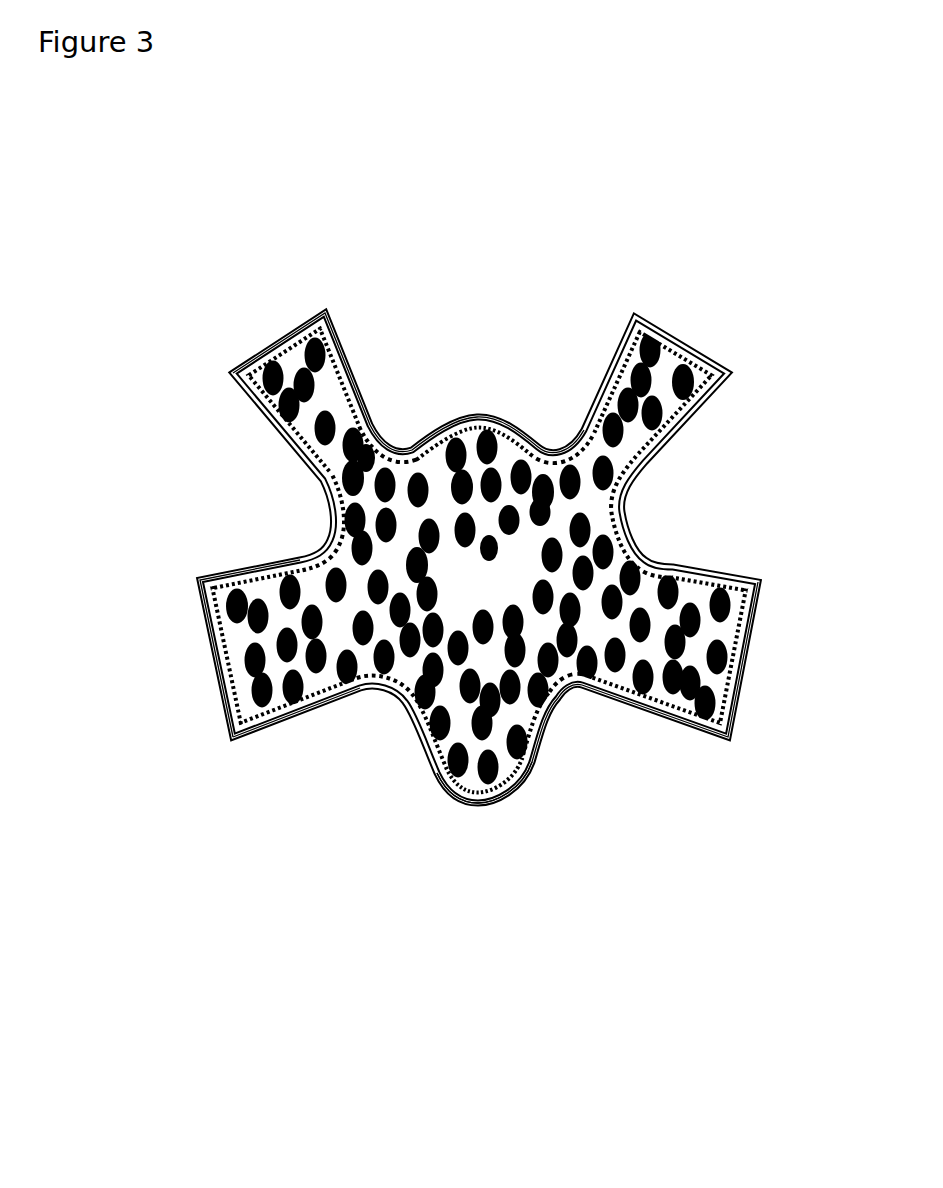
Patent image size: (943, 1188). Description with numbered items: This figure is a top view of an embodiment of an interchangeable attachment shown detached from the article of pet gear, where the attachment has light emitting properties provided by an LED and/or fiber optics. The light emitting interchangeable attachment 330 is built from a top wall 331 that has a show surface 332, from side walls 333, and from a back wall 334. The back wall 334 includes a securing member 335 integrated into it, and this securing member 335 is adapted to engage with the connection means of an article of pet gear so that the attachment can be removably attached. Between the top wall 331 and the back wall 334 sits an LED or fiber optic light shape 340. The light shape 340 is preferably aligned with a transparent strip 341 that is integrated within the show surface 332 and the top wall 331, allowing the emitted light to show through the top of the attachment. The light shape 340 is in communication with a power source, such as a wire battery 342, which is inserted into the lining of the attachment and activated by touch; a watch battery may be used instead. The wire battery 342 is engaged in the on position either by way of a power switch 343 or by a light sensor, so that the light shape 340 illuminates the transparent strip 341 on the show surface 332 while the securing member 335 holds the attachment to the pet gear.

The light emitting interchangeable attachment 330 is at (382, 558).
The top wall 331 is at (426, 472).
The show surface 332 is at (520, 735).
The side walls 333 is at (730, 730).
The back wall 334 is at (208, 640).
The securing member 335 is at (200, 621).
The light shape 340 is at (277, 427).
The transparent strip 341 is at (330, 710).
The wire battery 342 is at (488, 808).
The power switch 343 is at (478, 806).